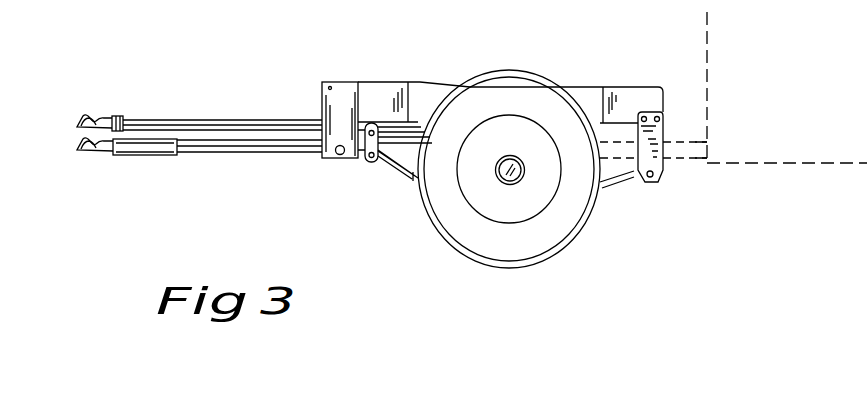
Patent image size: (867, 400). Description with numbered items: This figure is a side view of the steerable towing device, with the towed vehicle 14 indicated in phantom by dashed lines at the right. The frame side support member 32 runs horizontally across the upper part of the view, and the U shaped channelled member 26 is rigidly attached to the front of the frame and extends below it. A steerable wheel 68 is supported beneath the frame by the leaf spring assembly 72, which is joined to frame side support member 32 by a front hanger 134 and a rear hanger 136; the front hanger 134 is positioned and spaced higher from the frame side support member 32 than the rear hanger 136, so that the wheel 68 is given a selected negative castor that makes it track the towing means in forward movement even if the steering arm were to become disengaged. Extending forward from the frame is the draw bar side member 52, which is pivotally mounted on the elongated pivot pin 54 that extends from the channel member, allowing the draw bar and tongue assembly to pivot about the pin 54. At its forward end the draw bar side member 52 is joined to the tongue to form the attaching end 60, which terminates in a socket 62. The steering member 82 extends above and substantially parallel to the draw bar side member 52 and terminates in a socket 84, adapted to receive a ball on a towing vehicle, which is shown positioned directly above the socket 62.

The towed vehicle 14 is at (707, 58).
The U shaped channelled member 26 is at (330, 88).
The frame side support member 32 is at (420, 82).
The draw bar side member 52 is at (233, 153).
The pivot pin 54 is at (337, 154).
The attaching end 60 is at (170, 155).
The socket 62 is at (110, 153).
The steerable wheel 68 is at (583, 232).
The leaf spring assembly 72 is at (410, 185).
The steering member 82 is at (170, 123).
The socket 84 is at (95, 118).
The front hanger 134 is at (373, 164).
The rear hanger 136 is at (663, 163).